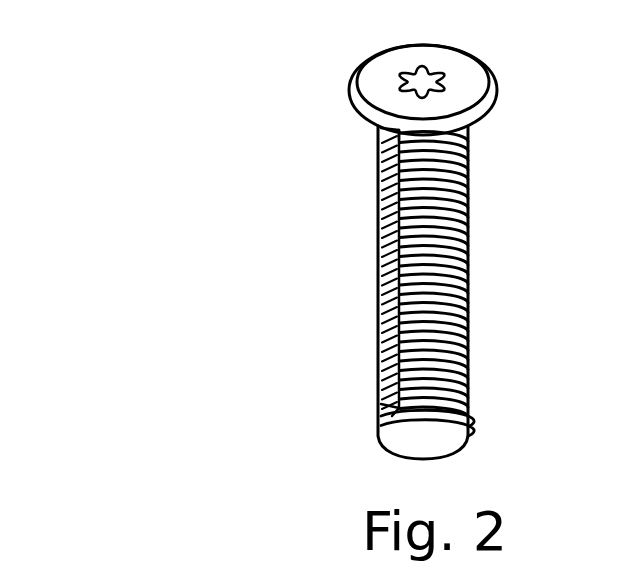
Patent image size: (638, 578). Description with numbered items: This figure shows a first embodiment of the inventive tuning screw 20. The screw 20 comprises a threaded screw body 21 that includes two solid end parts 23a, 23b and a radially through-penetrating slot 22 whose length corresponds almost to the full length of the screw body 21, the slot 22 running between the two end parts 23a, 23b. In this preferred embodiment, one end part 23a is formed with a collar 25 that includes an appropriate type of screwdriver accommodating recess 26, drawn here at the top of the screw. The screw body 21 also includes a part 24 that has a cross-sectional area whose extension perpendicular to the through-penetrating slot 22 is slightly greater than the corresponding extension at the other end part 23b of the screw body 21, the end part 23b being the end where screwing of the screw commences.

The tuning screw 20 is at (95, 108).
The threaded screw body 21 is at (483, 172).
The radially through-penetrating slot 22 is at (397, 314).
The end part 23a is at (401, 150).
The end part 23b is at (403, 438).
The part 24 is at (480, 295).
The collar 25 is at (466, 88).
The screwdriver accommodating recess 26 is at (402, 76).